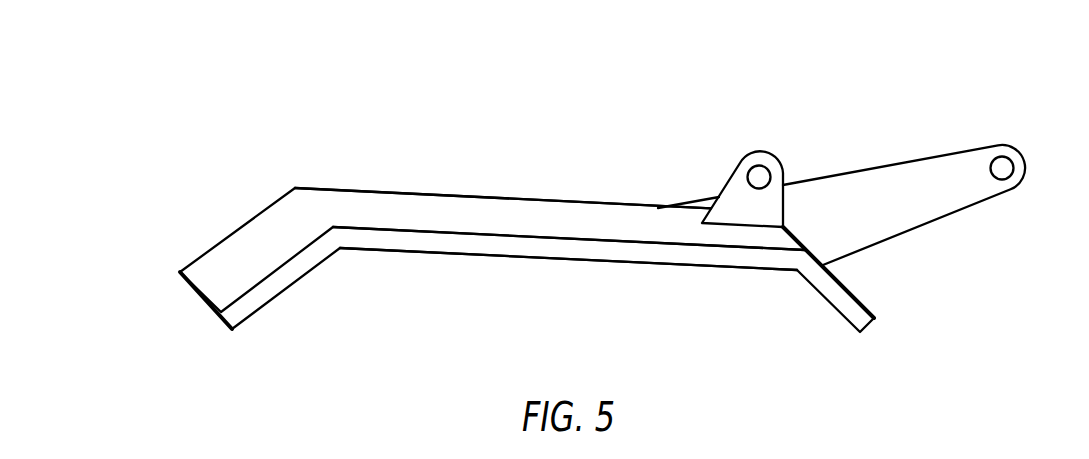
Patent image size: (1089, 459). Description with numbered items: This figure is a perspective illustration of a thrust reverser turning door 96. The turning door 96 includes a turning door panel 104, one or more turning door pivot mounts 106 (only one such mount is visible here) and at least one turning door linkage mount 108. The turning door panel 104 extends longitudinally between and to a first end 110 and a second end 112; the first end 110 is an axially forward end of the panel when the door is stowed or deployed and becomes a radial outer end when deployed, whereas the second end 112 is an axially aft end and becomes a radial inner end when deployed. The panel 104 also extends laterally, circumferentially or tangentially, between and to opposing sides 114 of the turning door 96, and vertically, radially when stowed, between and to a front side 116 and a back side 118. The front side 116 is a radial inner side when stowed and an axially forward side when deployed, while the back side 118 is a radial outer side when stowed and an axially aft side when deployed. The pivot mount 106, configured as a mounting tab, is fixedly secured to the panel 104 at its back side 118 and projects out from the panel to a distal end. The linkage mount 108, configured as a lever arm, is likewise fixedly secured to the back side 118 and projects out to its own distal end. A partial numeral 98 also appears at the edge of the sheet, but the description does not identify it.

The TR turning door 96 is at (343, 110).
The turning door panel 104 is at (522, 197).
The turning door pivot mount 106 is at (762, 151).
The turning door linkage mount 108 is at (960, 153).
The first end 110 is at (199, 298).
The second end 112 is at (871, 323).
The opposing sides 114 is at (528, 246).
The front side 116 is at (407, 253).
The back side 118 is at (393, 192).
The adjacent component 98 is at (1000, 451).